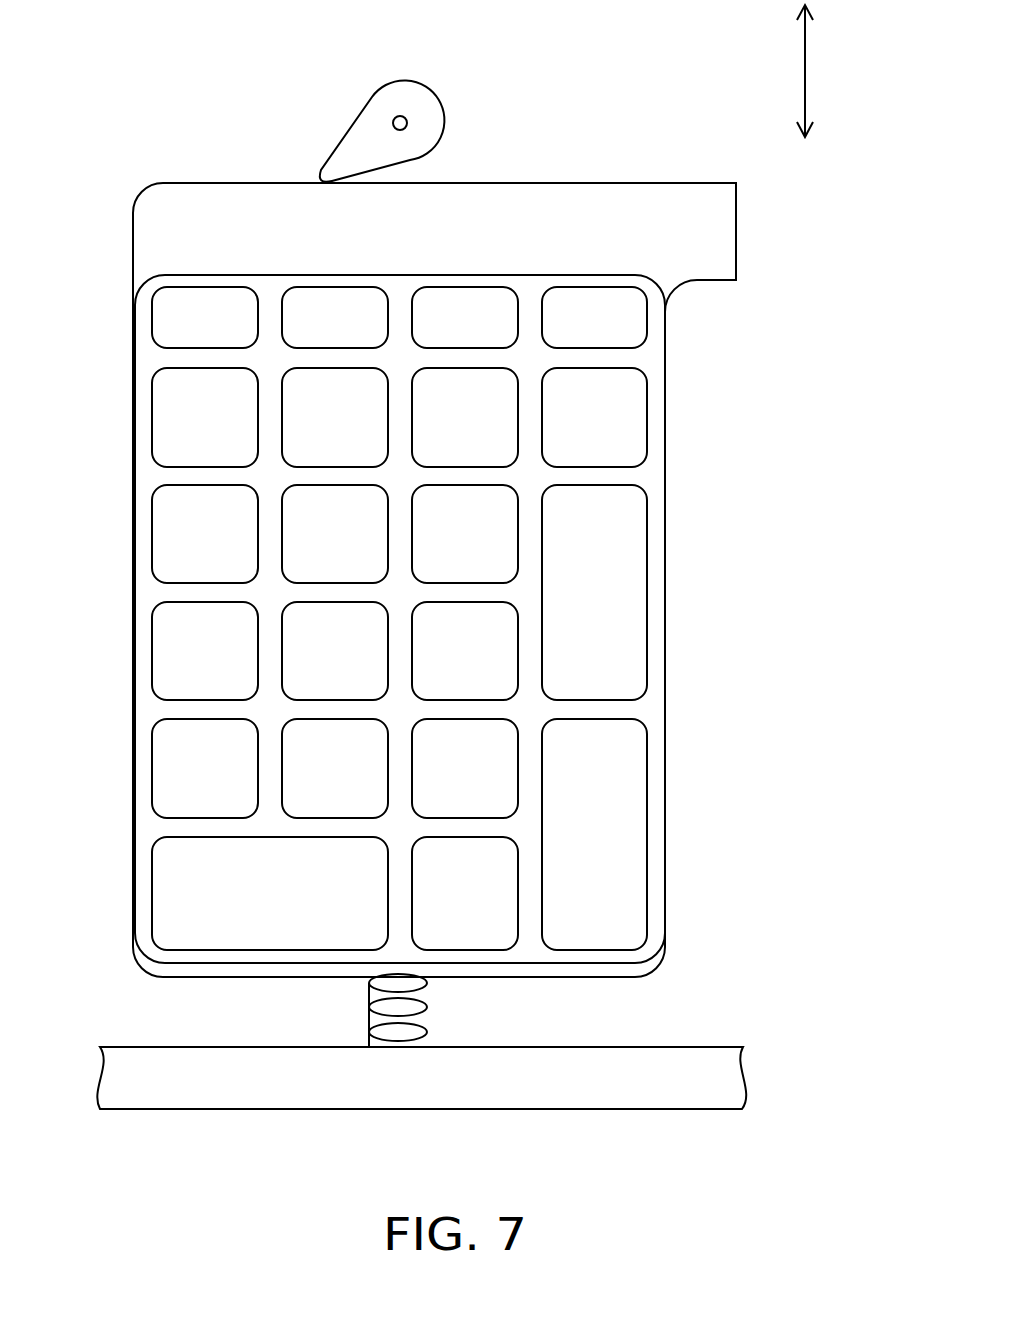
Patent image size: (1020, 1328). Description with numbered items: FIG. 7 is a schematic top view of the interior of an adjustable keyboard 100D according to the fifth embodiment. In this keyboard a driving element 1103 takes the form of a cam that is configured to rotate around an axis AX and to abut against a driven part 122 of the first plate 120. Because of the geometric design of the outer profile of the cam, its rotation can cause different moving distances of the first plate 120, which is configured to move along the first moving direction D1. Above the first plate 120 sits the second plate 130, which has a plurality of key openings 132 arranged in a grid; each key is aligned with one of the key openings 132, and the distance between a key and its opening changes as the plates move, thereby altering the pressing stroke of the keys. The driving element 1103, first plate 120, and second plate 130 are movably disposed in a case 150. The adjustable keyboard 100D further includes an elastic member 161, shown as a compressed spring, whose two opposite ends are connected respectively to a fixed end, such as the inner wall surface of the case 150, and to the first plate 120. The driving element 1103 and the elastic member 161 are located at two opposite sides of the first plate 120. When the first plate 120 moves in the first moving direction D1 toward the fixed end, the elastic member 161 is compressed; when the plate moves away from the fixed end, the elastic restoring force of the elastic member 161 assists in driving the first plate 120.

The driving element 1103 is at (398, 92).
The axis AX is at (410, 122).
The driven part 122 is at (642, 205).
The key openings 132 is at (410, 417).
The second plate 130 is at (655, 546).
The first plate 120 is at (147, 971).
The elastic member 161 is at (368, 1018).
The case 150 is at (623, 1092).
The first moving direction D1 is at (817, 71).
The adjustable keyboard 100D is at (866, 1181).